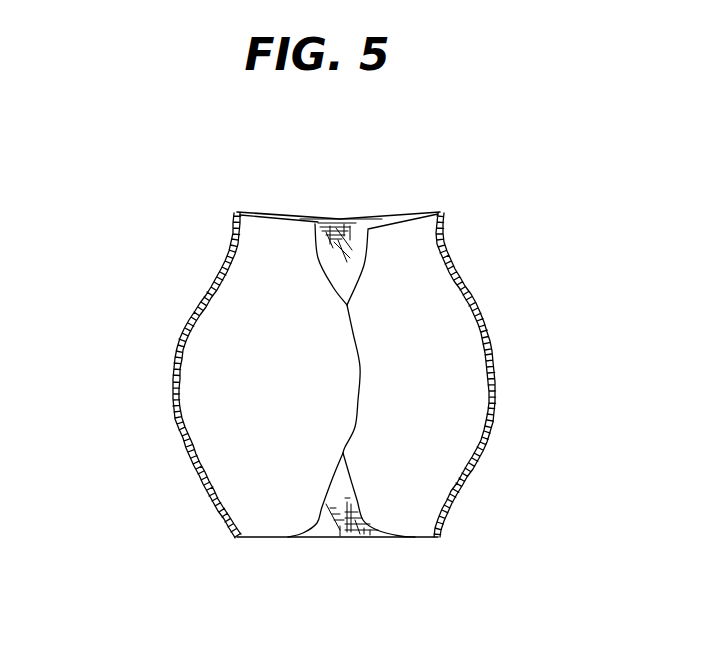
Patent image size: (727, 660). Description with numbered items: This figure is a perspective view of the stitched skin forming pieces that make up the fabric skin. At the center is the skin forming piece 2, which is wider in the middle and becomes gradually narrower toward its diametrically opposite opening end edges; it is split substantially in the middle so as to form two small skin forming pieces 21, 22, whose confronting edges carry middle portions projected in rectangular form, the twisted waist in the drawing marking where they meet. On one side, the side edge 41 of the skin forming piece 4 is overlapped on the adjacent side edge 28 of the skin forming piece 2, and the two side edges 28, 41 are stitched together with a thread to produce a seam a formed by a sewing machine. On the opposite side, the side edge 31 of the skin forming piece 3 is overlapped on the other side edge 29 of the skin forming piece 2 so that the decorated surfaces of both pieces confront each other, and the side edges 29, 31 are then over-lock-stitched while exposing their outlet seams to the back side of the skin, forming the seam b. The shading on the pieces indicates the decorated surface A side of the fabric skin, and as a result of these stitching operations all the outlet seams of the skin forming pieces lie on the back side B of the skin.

The skin forming piece 2 is at (305, 204).
The small skin forming piece 21 is at (327, 528).
The small skin forming piece 22 is at (349, 227).
The side edge 28 is at (447, 222).
The side edge 29 is at (230, 242).
The skin forming piece 3 is at (230, 310).
The side edge 31 is at (176, 370).
The skin forming piece 4 is at (462, 397).
The side edge 41 is at (478, 311).
The seam a is at (480, 455).
The seam b is at (184, 437).
The decorated surface A is at (355, 537).
The back side B is at (272, 510).